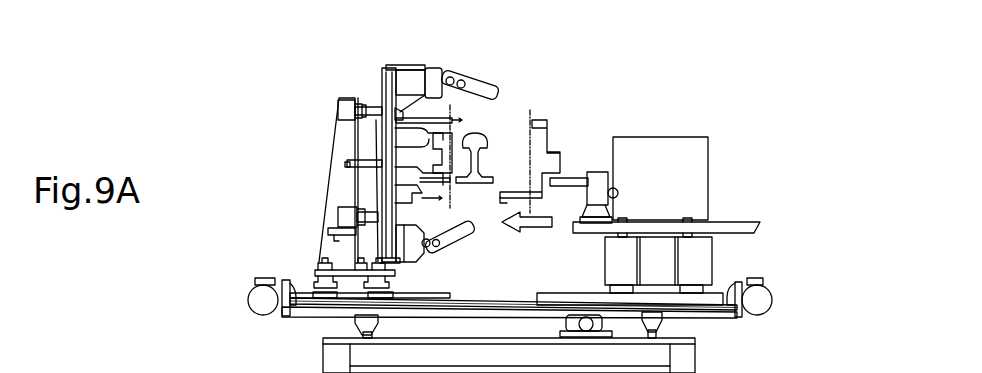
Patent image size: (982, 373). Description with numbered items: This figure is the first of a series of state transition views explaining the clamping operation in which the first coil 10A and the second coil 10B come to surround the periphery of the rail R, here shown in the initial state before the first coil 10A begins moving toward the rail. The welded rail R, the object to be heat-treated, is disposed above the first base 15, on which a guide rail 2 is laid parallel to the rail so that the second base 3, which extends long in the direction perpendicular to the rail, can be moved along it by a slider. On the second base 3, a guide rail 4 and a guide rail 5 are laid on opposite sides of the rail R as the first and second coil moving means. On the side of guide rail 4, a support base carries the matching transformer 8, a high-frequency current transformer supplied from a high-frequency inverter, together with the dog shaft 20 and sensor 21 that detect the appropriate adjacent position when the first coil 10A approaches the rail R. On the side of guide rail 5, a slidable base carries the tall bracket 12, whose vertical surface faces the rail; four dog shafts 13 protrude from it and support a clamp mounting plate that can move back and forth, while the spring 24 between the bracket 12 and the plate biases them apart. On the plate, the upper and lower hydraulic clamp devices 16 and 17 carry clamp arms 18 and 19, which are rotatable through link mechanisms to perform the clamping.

The guide rail 2 is at (662, 333).
The second base 3 is at (492, 303).
The guide rail 4 is at (718, 296).
The guide rail 5 is at (298, 296).
The matching transformer 8 is at (700, 178).
The first coil 10A is at (547, 127).
The second coil 10B is at (427, 167).
The bracket 12 is at (332, 228).
The dog shaft 13 is at (368, 97).
The first base 15 is at (697, 353).
The hydraulic clamp device 16 is at (402, 65).
The hydraulic clamp device 17 is at (400, 254).
The clamp arm 18 is at (472, 75).
The clamp arm 19 is at (460, 238).
The dog shaft 20 is at (567, 178).
The sensor 21 is at (615, 188).
The spring 24 is at (374, 162).
The rail R is at (482, 133).